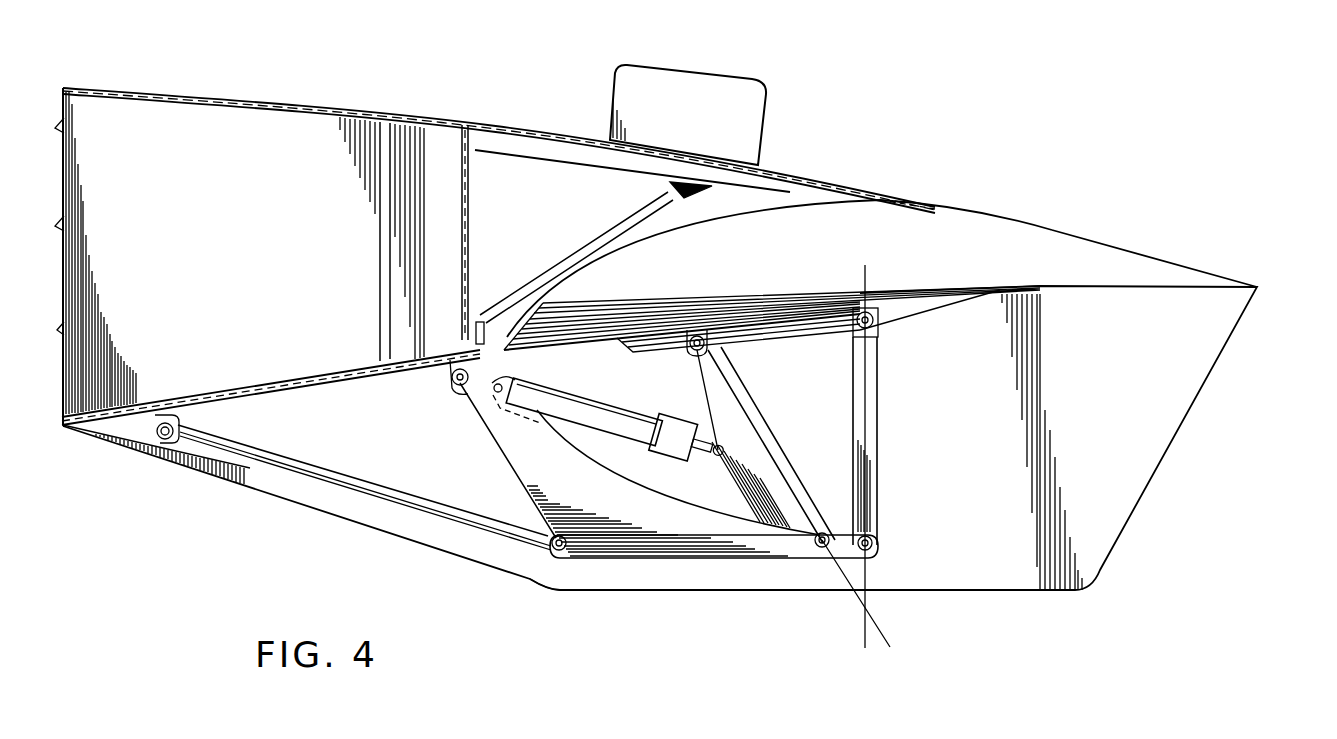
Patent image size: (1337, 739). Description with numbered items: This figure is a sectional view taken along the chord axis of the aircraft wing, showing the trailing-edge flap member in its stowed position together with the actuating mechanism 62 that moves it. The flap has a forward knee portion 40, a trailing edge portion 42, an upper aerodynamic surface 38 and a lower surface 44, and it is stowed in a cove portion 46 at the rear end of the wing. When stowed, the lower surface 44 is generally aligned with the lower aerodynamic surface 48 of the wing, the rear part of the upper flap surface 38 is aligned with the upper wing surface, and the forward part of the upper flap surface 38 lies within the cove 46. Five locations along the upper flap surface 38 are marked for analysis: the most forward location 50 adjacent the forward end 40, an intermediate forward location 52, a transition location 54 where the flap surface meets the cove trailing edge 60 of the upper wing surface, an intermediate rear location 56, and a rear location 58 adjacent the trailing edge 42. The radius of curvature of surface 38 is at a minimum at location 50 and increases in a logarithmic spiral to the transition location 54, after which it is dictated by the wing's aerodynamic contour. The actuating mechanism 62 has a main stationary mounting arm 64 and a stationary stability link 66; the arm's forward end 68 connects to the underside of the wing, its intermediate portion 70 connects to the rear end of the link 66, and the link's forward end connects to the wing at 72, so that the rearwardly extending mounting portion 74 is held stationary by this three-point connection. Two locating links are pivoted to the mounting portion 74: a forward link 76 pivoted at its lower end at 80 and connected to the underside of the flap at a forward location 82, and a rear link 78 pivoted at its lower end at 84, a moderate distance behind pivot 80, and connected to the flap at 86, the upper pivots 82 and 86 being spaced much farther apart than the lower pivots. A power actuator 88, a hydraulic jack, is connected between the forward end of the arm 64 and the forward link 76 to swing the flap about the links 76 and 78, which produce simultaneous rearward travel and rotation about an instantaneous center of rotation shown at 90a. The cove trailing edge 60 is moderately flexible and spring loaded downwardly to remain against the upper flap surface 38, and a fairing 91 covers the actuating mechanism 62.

The upper aerodynamic surface 38 is at (781, 197).
The forward knee portion 40 is at (502, 336).
The trailing edge portion 42 is at (1260, 286).
The lower surface 44 is at (960, 300).
The cove portion 46 is at (762, 190).
The lower aerodynamic surface 48 is at (322, 372).
The most forward location 50 is at (522, 328).
The intermediate forward location 52 is at (651, 243).
The transition location 54 is at (857, 192).
The intermediate rear location 56 is at (1057, 230).
The rear location 58 is at (1243, 282).
The cove trailing edge 60 is at (878, 188).
The actuating mechanism 62 is at (523, 590).
The main stationary mounting arm 64 is at (503, 453).
The stationary stability link 66 is at (380, 500).
The forward end 68 is at (458, 368).
The intermediate portion 70 is at (560, 553).
The connecting location 72 is at (160, 446).
The rearwardly extending mounting portion 74 is at (725, 550).
The forward link 76 is at (722, 395).
The rear link 78 is at (877, 424).
The lower pivot location 80 is at (818, 548).
The forward pivot location 82 is at (699, 335).
The lower pivot location 84 is at (878, 541).
The upper pivot location 86 is at (878, 312).
The power actuator 88 is at (600, 425).
The instantaneous center of rotation 90a is at (876, 592).
The fairing 91 is at (658, 591).